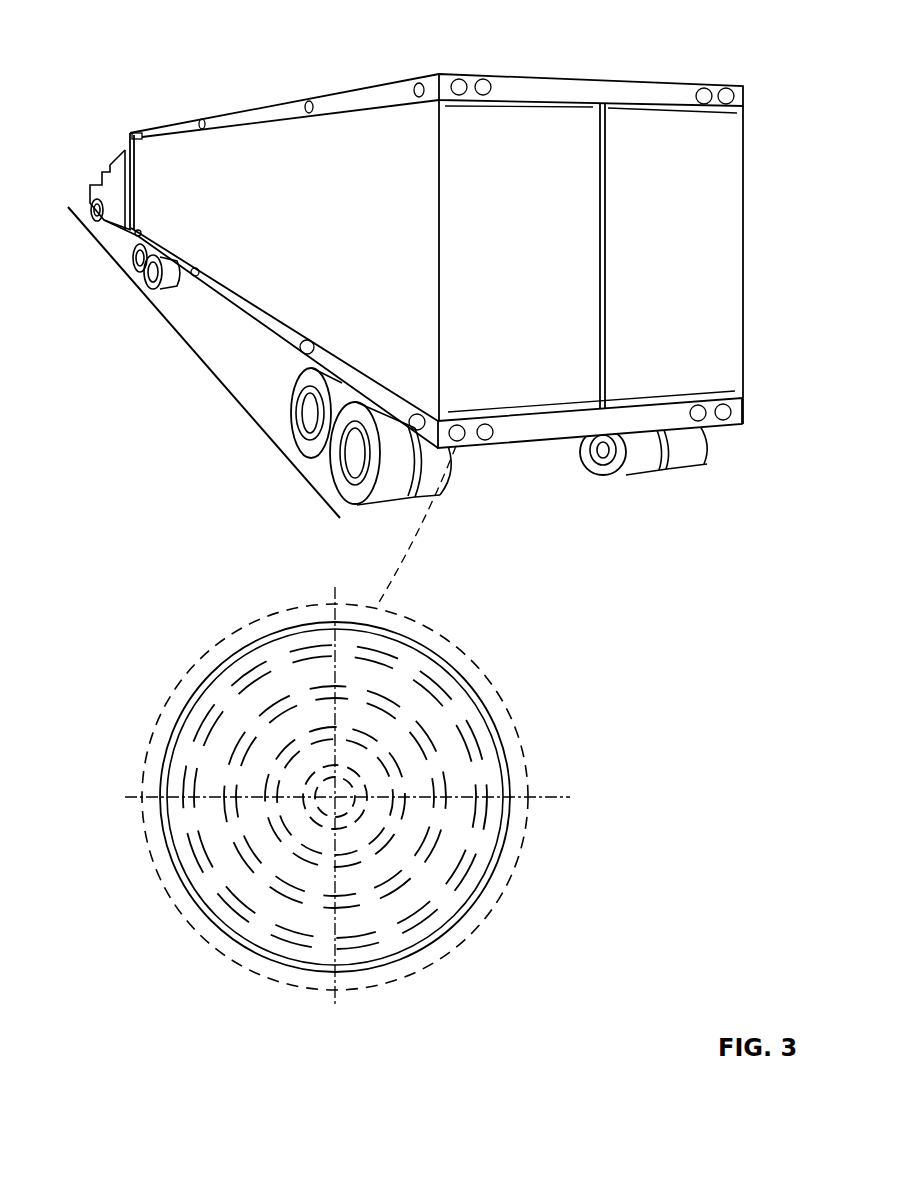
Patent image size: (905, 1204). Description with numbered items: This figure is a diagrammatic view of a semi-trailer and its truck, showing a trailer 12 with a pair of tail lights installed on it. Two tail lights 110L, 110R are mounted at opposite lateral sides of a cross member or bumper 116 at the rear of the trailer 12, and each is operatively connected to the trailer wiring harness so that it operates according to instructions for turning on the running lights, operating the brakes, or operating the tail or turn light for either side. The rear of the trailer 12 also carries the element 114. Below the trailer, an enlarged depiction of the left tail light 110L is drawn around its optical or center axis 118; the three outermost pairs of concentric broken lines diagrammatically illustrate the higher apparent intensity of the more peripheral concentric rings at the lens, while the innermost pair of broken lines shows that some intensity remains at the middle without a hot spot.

The trailer 12 is at (441, 259).
The rear door 114 is at (678, 259).
The cross member or bumper 116 is at (657, 420).
The left tail light 110L is at (460, 437).
The right tail light 110R is at (728, 418).
The axis 118 is at (337, 797).